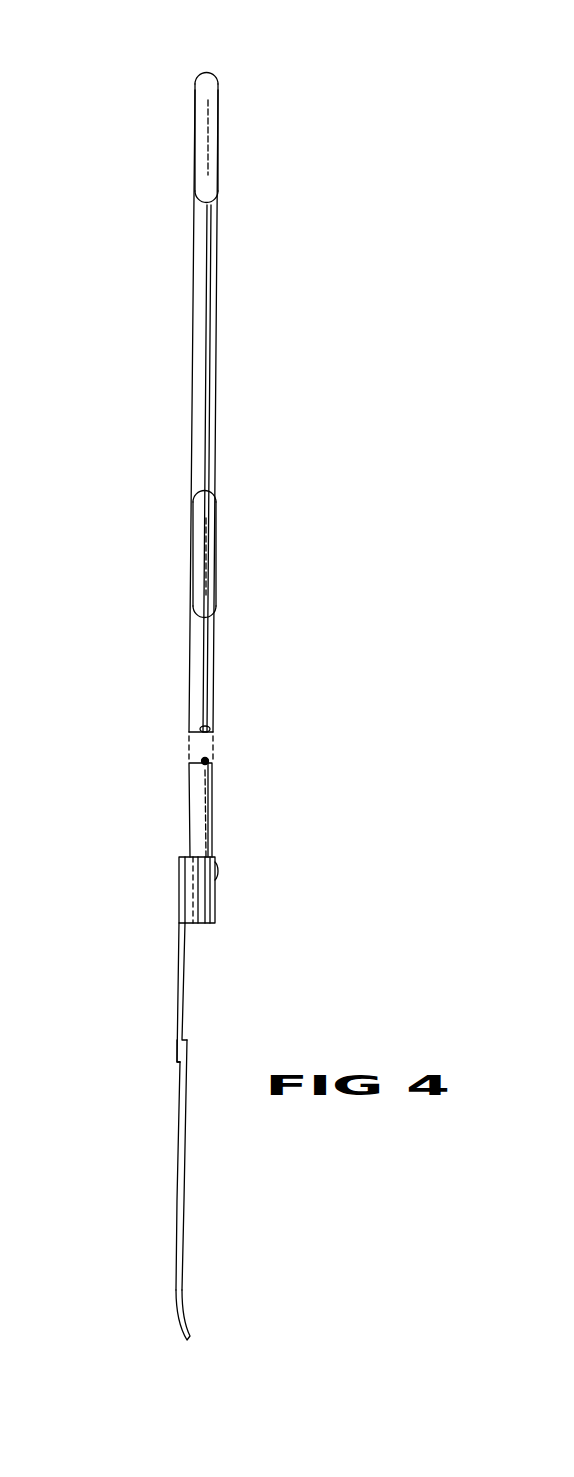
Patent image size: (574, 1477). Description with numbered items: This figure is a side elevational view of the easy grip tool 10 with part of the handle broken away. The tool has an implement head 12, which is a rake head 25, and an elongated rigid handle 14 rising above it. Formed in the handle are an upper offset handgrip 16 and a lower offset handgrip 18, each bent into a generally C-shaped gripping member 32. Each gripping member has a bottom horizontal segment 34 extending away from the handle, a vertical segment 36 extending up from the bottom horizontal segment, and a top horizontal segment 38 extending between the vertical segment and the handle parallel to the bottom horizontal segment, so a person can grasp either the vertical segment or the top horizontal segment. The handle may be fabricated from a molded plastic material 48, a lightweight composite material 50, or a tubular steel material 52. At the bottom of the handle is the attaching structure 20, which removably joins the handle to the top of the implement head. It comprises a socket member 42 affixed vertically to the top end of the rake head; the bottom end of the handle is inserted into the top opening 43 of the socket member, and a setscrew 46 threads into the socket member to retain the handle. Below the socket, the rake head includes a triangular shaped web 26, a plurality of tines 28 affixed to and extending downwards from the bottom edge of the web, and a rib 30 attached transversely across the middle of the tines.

The easy grip tool 10 is at (90, 372).
The implement head 12 is at (168, 953).
The elongated rigid handle 14 is at (184, 317).
The upper offset handgrip 16 is at (184, 98).
The lower offset handgrip 18 is at (182, 510).
The attaching structure 20 is at (226, 908).
The rake head 25 is at (168, 1018).
The triangular shaped web 26 is at (177, 1043).
The tines 28 is at (182, 1283).
The rib 30 is at (185, 1185).
The C-shaped gripping member 32 is at (186, 165).
The bottom horizontal segment 34 is at (205, 205).
The vertical segment 36 is at (203, 118).
The top horizontal segment 38 is at (206, 84).
The socket member 42 is at (190, 893).
The top opening 43 is at (203, 857).
The setscrew 46 is at (218, 871).
The molded plastic material 48 is at (285, 728).
The lightweight composite material 50 is at (285, 728).
The tubular steel material 52 is at (210, 760).